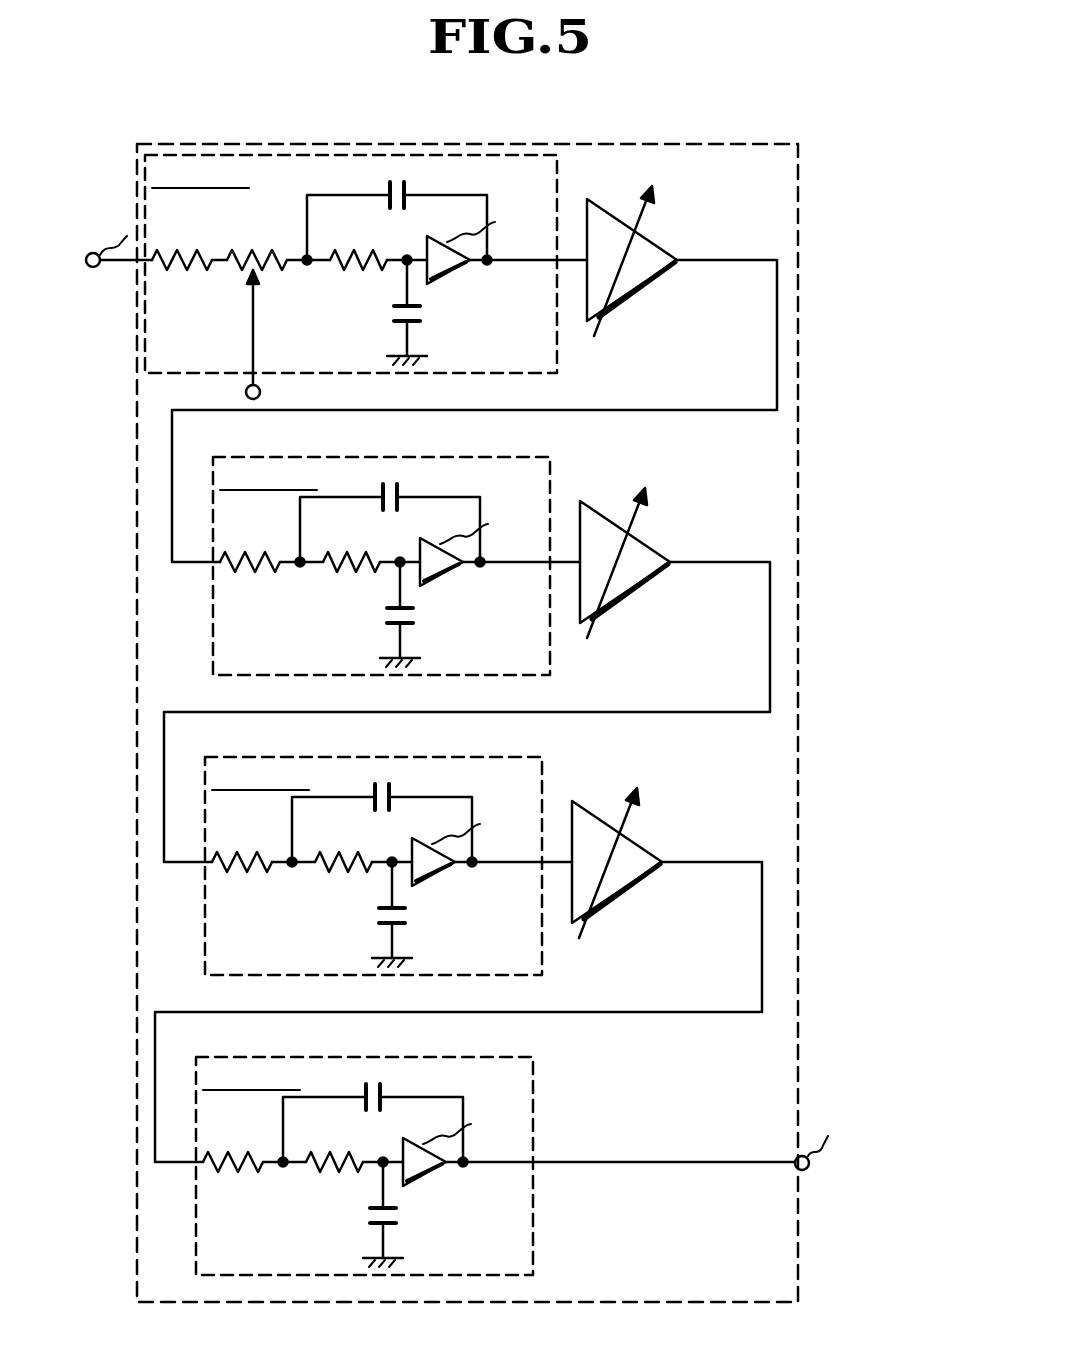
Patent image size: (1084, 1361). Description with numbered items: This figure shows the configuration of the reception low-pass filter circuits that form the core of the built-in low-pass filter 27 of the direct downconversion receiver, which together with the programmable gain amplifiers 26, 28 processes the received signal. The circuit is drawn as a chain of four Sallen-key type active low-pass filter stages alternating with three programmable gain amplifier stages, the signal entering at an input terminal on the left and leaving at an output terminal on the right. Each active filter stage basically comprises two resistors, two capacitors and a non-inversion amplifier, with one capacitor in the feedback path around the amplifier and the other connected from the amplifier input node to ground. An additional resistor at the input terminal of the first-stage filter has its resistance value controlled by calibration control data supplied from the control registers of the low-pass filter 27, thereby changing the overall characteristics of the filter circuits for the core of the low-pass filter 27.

The programmable gain amplifier 26 is at (507, 713).
The low-pass filter 27 is at (507, 713).
The programmable gain amplifier 28 is at (917, 151).